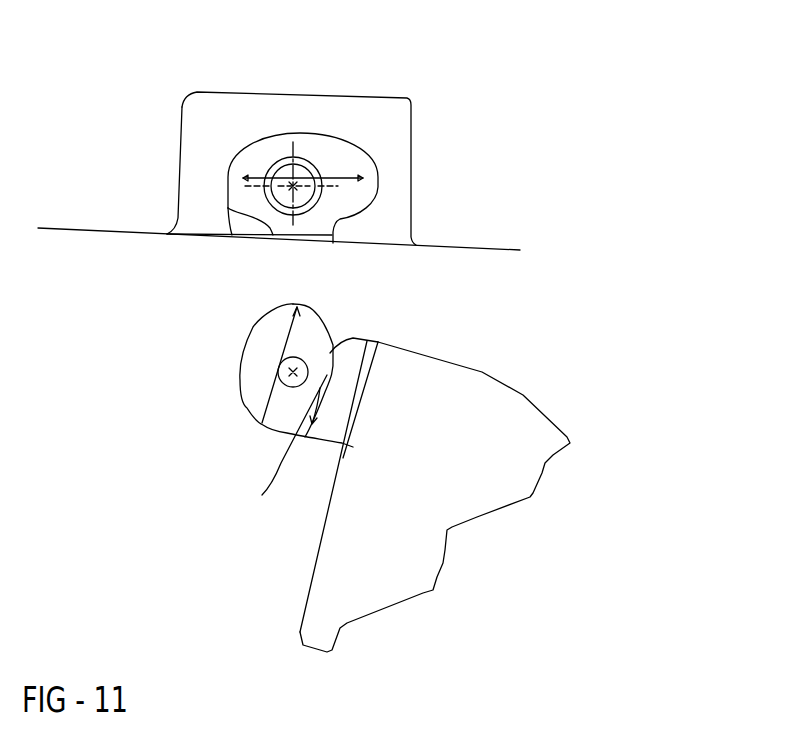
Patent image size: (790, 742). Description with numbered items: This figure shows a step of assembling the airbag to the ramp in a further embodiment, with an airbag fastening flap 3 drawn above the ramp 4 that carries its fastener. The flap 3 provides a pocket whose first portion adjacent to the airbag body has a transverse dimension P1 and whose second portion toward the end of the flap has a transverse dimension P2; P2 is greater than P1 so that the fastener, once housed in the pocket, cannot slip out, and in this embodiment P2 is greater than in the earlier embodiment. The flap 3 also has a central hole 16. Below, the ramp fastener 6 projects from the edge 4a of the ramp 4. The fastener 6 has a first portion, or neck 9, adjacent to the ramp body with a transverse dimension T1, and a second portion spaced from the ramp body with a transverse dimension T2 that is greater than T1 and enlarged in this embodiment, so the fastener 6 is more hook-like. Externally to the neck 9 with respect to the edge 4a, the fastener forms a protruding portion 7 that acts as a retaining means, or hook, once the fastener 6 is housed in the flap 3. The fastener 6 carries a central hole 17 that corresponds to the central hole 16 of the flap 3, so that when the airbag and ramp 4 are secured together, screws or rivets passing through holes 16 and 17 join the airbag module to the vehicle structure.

The airbag fastening flap 3 is at (213, 137).
The transverse dimension of first pocket portion P1 is at (227, 210).
The transverse dimension of second pocket portion P2 is at (258, 178).
The central hole of the flap 16 is at (315, 178).
The protruding portion 7 is at (284, 290).
The central hole of the ramp fastener 17 is at (301, 358).
The first portion (neck) 9 is at (344, 328).
The transverse dimension of second fastener portion T2 is at (290, 343).
The ramp fastener 6 is at (252, 417).
The transverse dimension of first fastener portion T1 is at (277, 449).
The edge of the ramp 4a is at (335, 508).
The ramp 4 is at (415, 545).